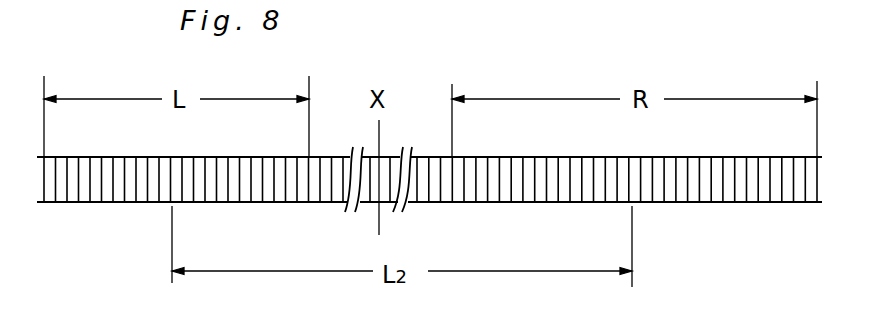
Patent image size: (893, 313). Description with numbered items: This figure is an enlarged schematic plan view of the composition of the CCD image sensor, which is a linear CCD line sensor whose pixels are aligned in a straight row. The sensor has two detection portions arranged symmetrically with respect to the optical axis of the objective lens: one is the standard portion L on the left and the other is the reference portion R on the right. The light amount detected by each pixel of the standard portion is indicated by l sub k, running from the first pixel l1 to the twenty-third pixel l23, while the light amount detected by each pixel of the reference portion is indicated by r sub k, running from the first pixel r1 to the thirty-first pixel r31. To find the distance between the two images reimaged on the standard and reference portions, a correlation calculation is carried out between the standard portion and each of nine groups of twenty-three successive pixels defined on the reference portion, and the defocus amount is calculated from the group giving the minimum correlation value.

The pixel light amount of standard portion l1 is at (50, 196).
The pixel light amount of standard portion l23 is at (303, 196).
The pixel light amount of reference portion r1 is at (455, 196).
The pixel light amount of reference portion r31 is at (810, 196).